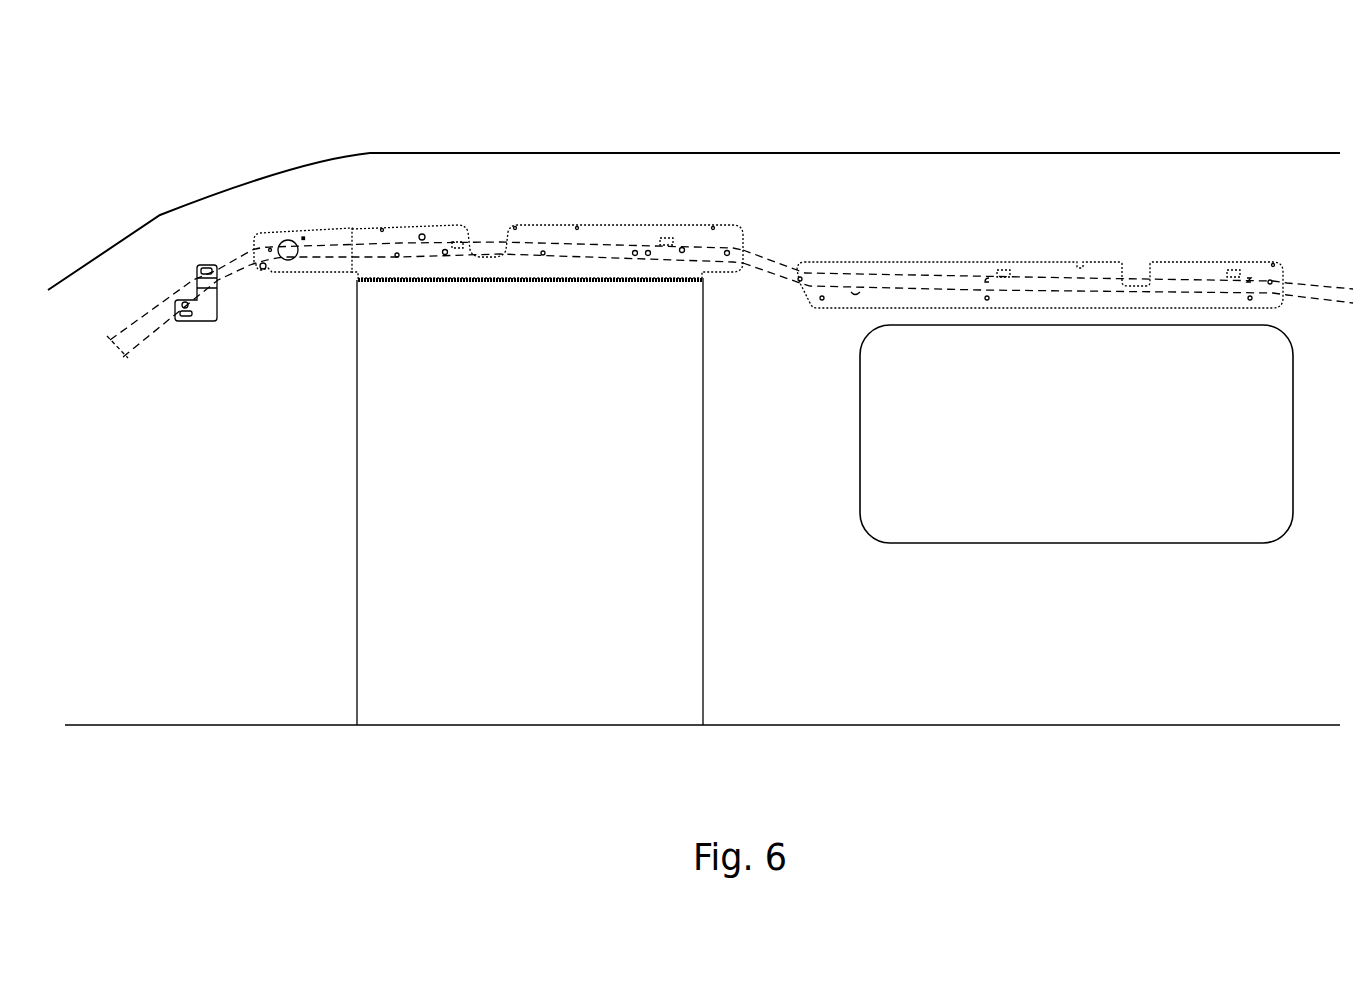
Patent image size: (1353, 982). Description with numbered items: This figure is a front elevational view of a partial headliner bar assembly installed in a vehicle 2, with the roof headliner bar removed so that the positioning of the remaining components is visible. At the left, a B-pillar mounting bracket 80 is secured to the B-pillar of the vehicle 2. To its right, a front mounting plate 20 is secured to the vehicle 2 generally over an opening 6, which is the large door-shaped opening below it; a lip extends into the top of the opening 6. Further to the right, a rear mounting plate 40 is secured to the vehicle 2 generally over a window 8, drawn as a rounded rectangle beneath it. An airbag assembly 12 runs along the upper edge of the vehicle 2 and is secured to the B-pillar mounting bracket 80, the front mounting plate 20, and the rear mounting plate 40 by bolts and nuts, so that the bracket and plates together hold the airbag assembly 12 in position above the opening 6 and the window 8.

The vehicle 2 is at (160, 217).
The opening 6 is at (435, 667).
The window 8 is at (1058, 478).
The airbag assembly 12 is at (160, 322).
The front mounting plate 20 is at (577, 212).
The rear mounting plate 40 is at (1193, 240).
The B-pillar mounting bracket 80 is at (202, 248).